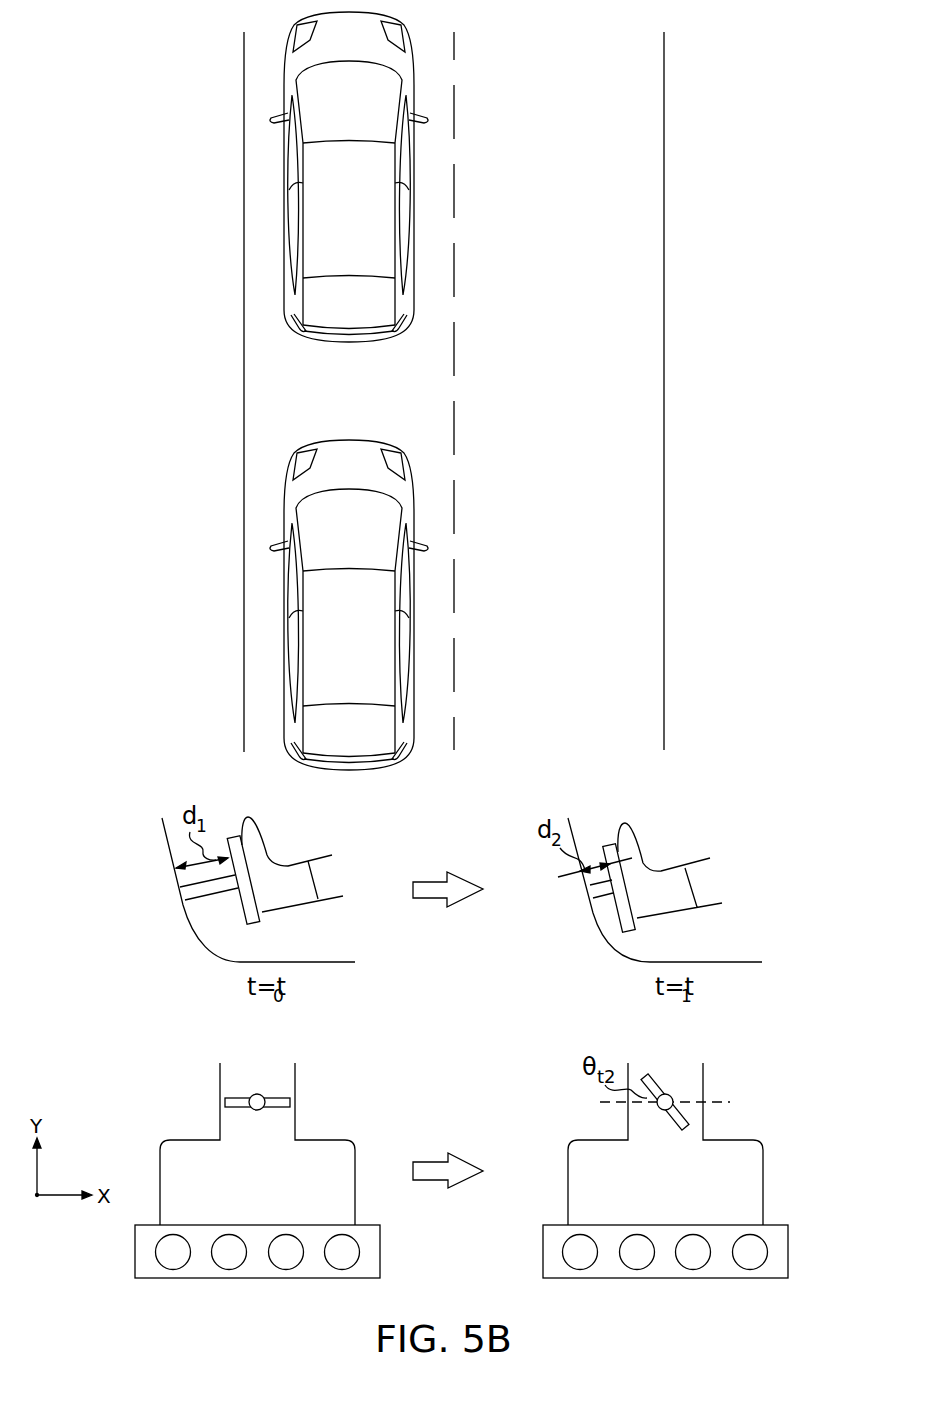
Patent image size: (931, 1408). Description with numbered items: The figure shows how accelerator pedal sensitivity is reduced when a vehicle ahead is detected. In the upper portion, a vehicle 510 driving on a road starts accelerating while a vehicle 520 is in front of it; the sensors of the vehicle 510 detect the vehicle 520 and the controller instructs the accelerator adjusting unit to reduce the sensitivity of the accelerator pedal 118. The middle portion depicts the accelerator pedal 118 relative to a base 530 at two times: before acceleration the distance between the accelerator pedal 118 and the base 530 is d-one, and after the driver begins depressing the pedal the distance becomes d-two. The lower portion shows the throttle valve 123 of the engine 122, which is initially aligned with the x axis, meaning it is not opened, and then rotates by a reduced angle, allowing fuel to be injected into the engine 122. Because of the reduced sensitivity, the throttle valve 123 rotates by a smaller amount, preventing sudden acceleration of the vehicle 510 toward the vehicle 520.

The vehicle 520 is at (285, 158).
The vehicle 510 is at (322, 438).
The accelerator pedal 118 is at (236, 836).
The base 530 is at (183, 912).
The engine 122 is at (190, 1140).
The throttle valve 123 is at (275, 1096).